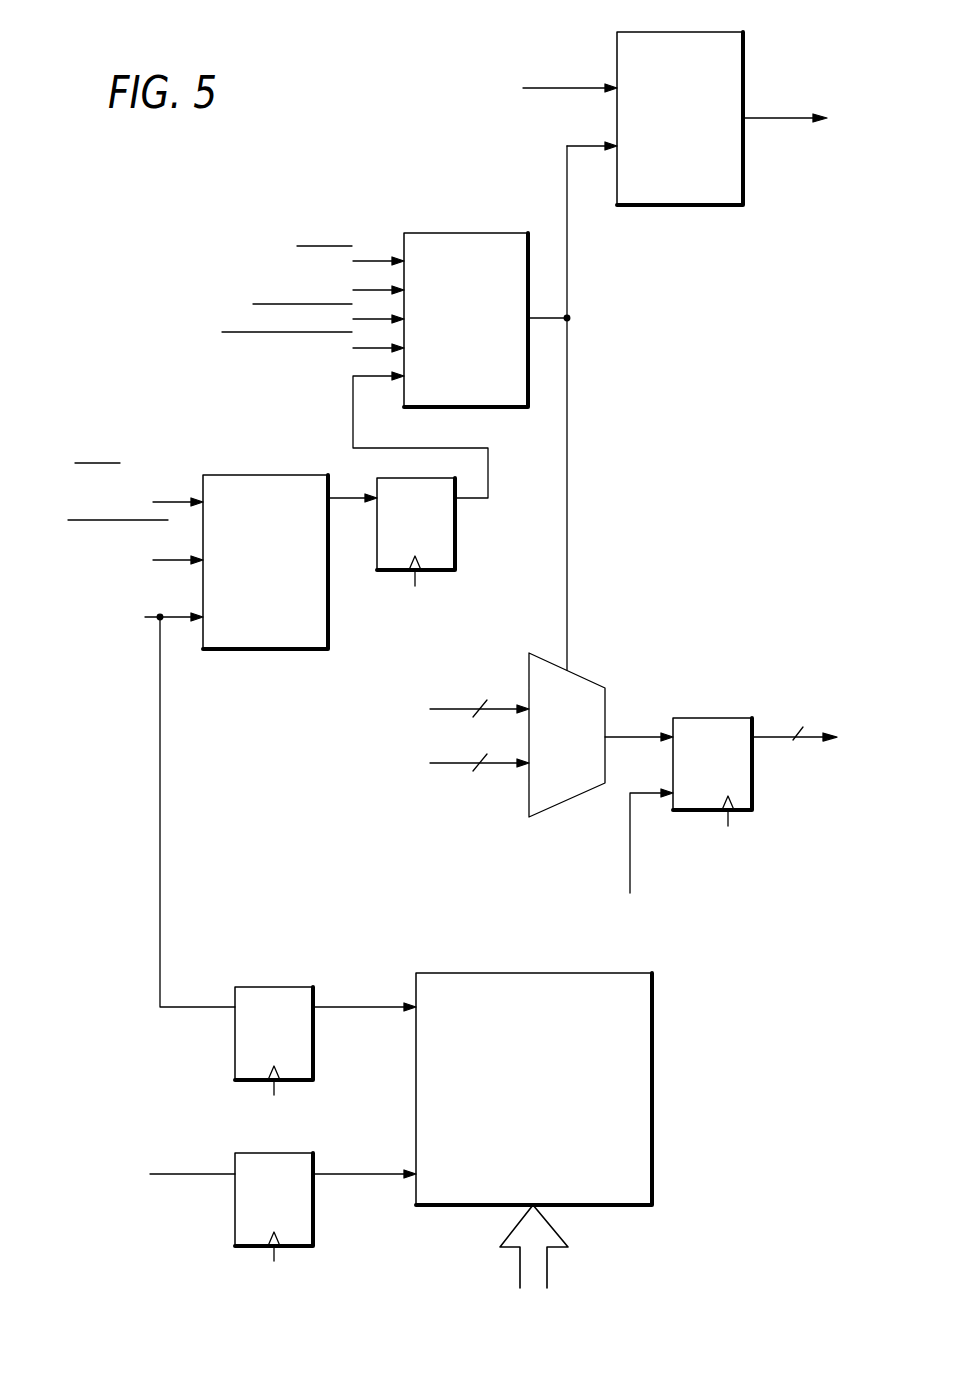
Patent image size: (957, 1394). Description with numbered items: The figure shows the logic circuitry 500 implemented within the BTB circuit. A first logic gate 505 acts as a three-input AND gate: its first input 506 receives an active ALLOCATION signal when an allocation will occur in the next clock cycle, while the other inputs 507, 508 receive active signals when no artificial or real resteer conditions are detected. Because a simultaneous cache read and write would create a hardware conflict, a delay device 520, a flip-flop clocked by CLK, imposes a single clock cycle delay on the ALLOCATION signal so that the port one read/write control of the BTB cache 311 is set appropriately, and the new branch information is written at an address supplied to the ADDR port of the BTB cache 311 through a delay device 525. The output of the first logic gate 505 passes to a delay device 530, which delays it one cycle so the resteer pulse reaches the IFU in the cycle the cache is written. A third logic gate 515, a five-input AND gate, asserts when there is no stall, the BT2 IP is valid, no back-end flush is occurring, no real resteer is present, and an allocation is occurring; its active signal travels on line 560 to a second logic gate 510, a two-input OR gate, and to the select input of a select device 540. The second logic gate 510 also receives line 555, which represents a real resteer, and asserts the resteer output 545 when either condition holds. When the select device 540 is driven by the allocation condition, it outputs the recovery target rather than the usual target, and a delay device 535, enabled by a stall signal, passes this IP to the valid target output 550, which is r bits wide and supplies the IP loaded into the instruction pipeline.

The logic circuitry 500 is at (118, 907).
The first logic gate 505 is at (248, 649).
The first input 506 is at (170, 620).
The input 507 is at (166, 565).
The input 508 is at (168, 500).
The second logic gate 510 is at (658, 206).
The third logic gate 515 is at (465, 407).
The delay device 520 is at (257, 987).
The delay device 525 is at (265, 1153).
The delay device 530 is at (455, 530).
The delay device 535 is at (690, 718).
The select device 540 is at (560, 807).
The resteer output 545 is at (767, 118).
The valid target output 550 is at (768, 737).
The line 555 is at (571, 88).
The line 560 is at (567, 423).
The BTB cache 311 is at (652, 1120).